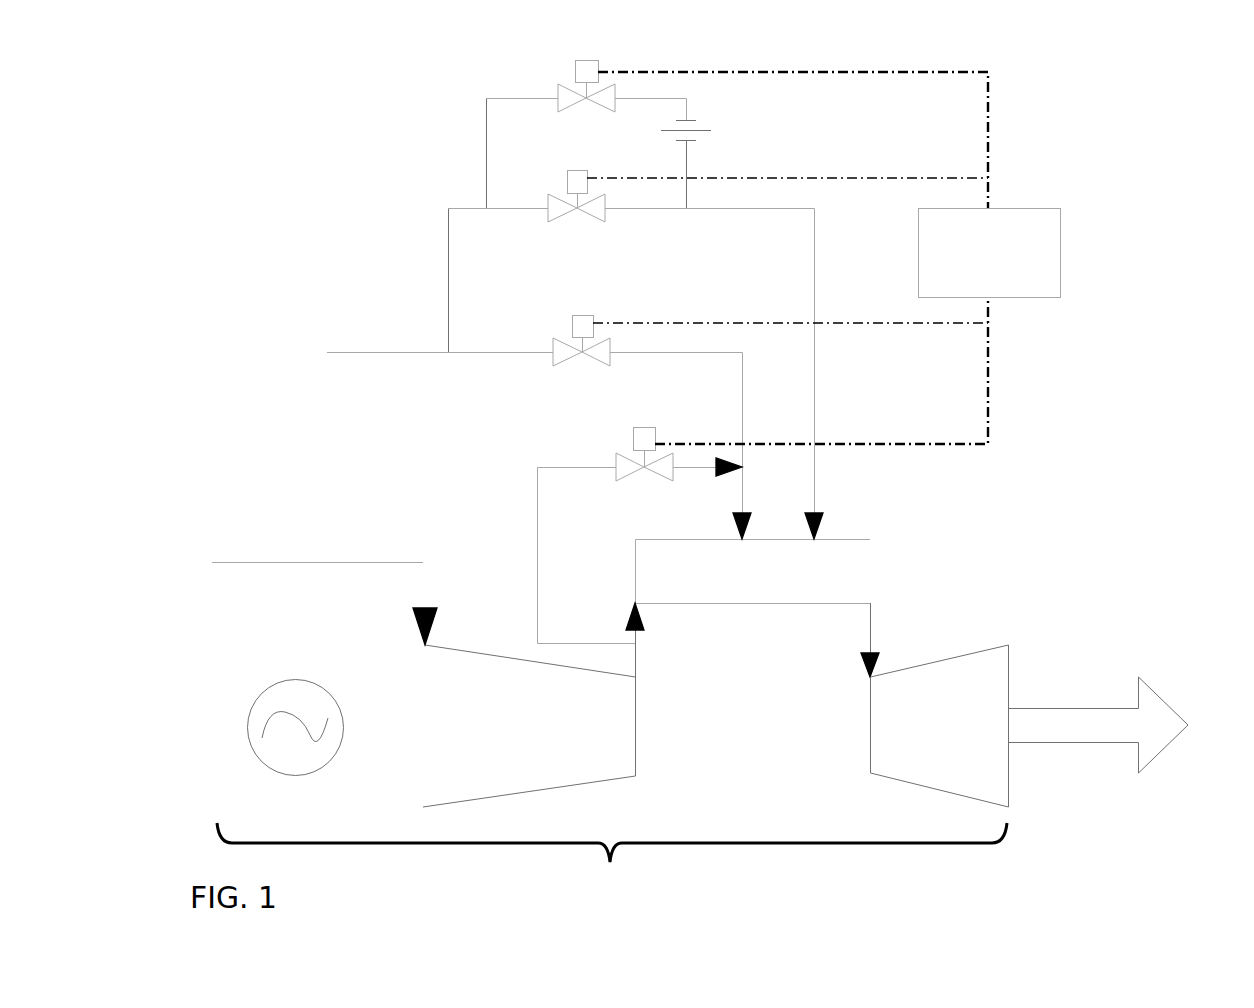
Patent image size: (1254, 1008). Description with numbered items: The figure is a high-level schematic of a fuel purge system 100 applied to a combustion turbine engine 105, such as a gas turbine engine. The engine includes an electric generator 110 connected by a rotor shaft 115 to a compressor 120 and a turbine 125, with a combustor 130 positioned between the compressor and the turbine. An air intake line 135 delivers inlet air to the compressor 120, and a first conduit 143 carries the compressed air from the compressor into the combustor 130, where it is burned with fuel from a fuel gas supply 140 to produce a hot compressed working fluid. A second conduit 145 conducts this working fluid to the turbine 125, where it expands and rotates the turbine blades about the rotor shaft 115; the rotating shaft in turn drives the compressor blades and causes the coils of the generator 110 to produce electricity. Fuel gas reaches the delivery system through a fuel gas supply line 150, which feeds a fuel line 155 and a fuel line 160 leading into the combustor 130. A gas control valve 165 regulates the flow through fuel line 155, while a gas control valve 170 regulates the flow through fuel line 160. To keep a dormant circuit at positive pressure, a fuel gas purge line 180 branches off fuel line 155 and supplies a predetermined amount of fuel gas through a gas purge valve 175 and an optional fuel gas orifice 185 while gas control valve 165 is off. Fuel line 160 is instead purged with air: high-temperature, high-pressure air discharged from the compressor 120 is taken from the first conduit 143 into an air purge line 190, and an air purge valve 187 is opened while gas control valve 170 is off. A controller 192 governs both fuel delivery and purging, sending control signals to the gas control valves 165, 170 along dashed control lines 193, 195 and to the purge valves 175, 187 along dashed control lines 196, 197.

The fuel purge system 100 is at (250, 102).
The combustion turbine engine 105 is at (612, 857).
The electric generator 110 is at (250, 705).
The rotor shaft 115 is at (790, 737).
The compressor 120 is at (540, 790).
The turbine 125 is at (962, 650).
The combustor 130 is at (862, 539).
The air intake line 135 is at (397, 562).
The fuel gas supply 140 is at (222, 307).
The first conduit 143 is at (637, 668).
The second conduit 145 is at (871, 633).
The fuel gas supply line 150 is at (418, 352).
The fuel line 155 is at (445, 243).
The fuel line 160 is at (484, 352).
The gas control valve 165 is at (575, 168).
The gas control valve 170 is at (583, 312).
The gas purge valve 175 is at (588, 60).
The fuel gas purge line 180 is at (482, 160).
The fuel gas orifice 185 is at (720, 125).
The air purge valve 187 is at (645, 427).
The air purge line 190 is at (537, 575).
The controller 192 is at (1037, 208).
The control line 193 is at (868, 178).
The control line 195 is at (845, 323).
The control line 196 is at (790, 72).
The control line 197 is at (920, 444).